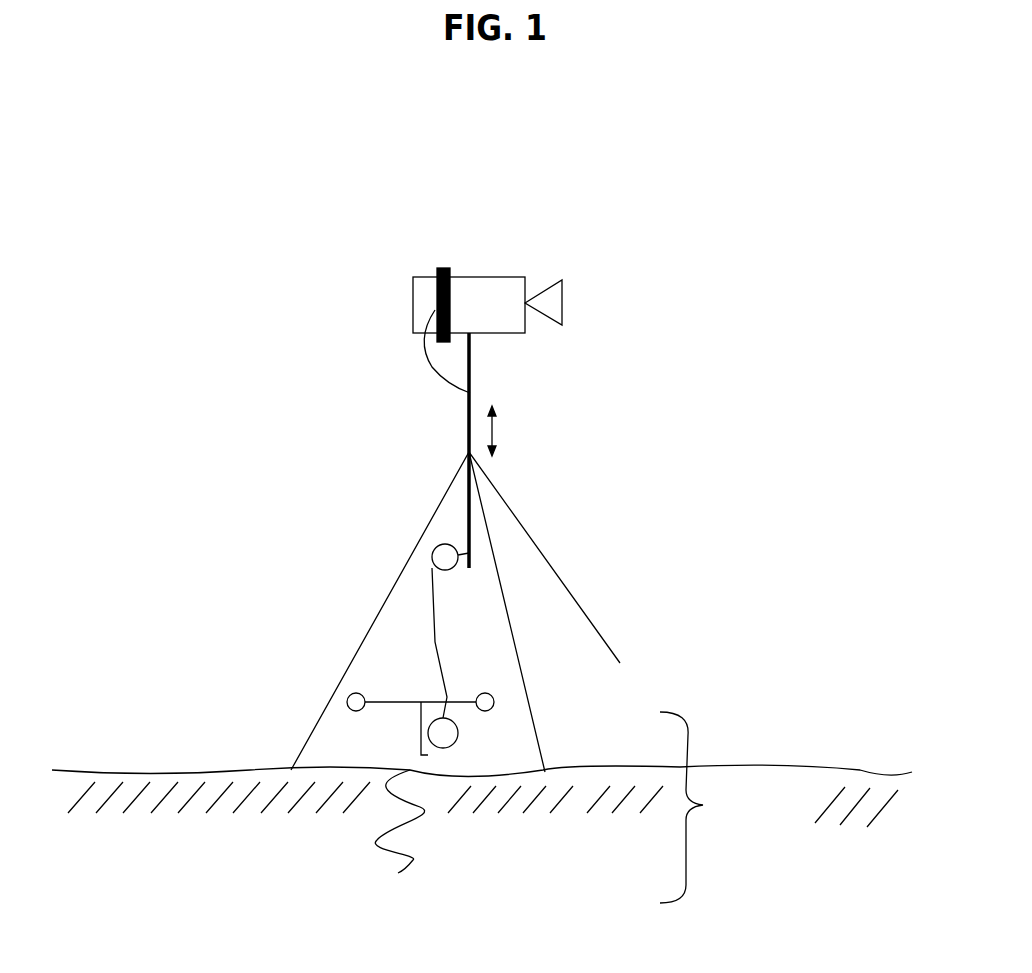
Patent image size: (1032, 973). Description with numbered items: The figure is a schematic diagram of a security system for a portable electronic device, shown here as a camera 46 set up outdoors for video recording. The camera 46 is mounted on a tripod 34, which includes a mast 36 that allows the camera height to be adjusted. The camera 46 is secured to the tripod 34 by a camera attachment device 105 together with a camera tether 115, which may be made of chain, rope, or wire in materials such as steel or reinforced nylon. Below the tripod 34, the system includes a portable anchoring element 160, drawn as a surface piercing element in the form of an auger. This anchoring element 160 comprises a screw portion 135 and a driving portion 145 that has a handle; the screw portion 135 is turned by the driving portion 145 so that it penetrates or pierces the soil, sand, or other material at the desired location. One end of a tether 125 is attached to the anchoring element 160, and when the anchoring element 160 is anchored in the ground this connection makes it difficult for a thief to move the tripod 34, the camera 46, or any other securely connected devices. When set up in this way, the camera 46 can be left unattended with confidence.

The camera 46 is at (468, 276).
The camera attachment device 105 is at (437, 272).
The camera tether 115 is at (427, 358).
The mast 36 is at (470, 405).
The tripod 34 is at (548, 557).
The tether 125 is at (435, 642).
The driving portion 145 is at (460, 697).
The screw portion 135 is at (380, 837).
The anchoring element 160 is at (730, 807).